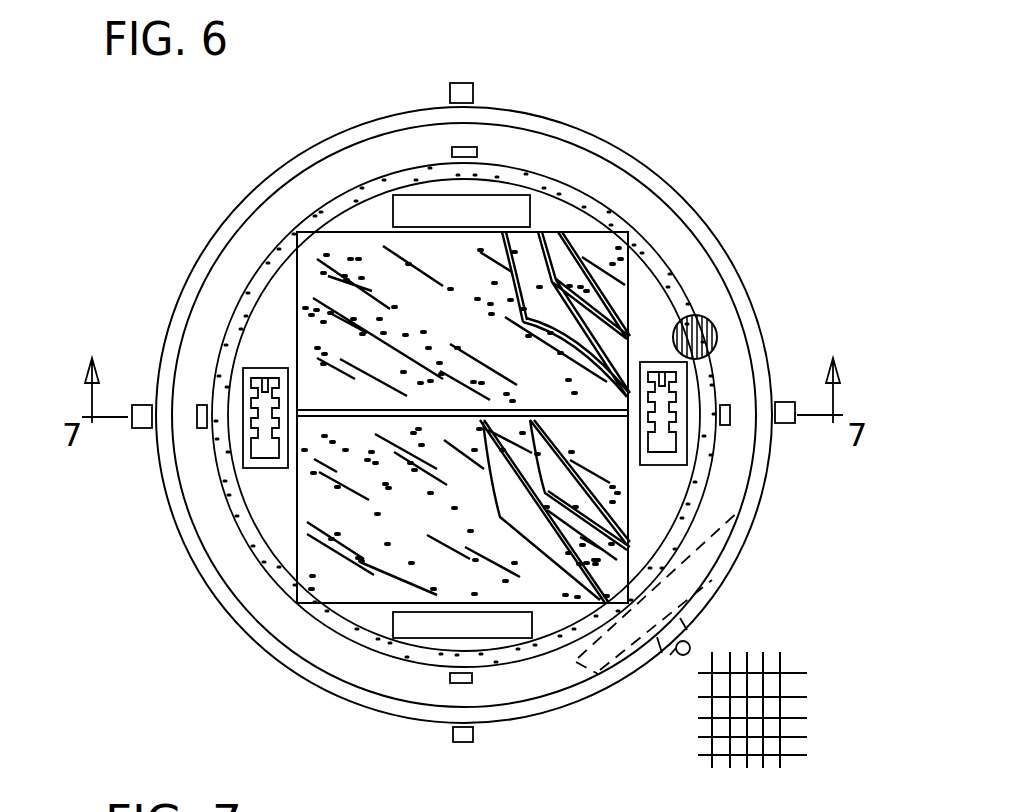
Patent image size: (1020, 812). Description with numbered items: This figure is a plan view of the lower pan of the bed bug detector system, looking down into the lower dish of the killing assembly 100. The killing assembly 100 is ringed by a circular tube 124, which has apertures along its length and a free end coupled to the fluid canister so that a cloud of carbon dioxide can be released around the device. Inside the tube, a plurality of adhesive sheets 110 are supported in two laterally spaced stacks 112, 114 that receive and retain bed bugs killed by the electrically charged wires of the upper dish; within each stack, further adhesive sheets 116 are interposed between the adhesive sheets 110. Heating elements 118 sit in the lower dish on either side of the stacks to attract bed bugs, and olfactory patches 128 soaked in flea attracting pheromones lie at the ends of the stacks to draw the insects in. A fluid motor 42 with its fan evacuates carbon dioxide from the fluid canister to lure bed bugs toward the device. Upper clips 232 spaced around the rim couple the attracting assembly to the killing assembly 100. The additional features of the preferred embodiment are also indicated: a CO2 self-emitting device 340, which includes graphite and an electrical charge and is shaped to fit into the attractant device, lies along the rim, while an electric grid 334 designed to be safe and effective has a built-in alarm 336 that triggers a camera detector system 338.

The killing assembly 100 is at (97, 262).
The upper clips 232 is at (470, 83).
The tube 124 is at (257, 545).
The stack 112 is at (361, 417).
The adhesive sheets 110 is at (470, 329).
The stack 114 is at (632, 240).
The adhesive sheets 116 is at (618, 497).
The olfactory patches 128 is at (483, 205).
The heating elements 118 is at (264, 368).
The fluid motor 42 is at (715, 323).
The CO2 self-emitting device 340 is at (708, 537).
The camera detector system 338 is at (690, 642).
The alarm 336 is at (673, 650).
The electric grid 334 is at (802, 713).